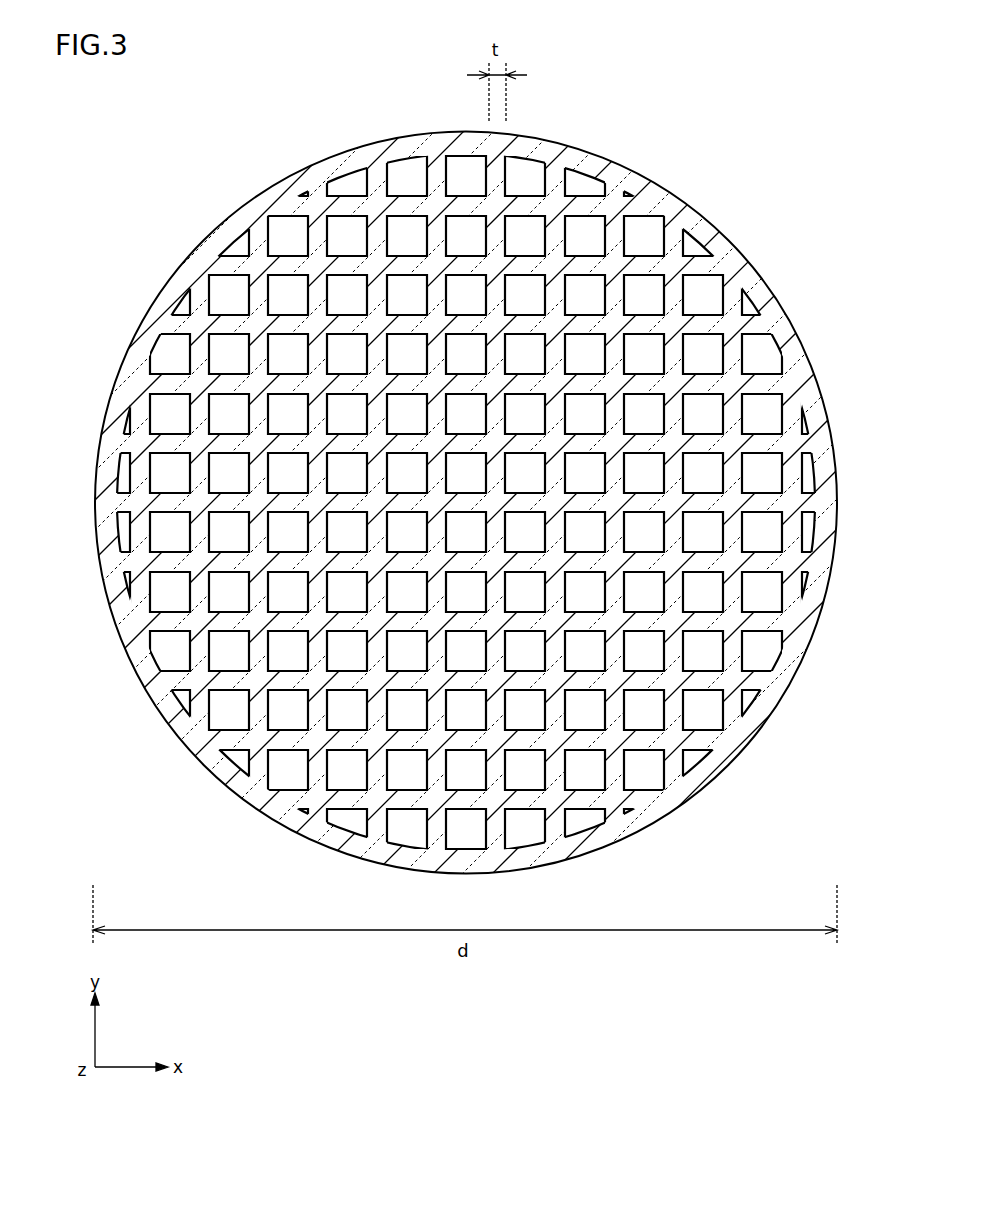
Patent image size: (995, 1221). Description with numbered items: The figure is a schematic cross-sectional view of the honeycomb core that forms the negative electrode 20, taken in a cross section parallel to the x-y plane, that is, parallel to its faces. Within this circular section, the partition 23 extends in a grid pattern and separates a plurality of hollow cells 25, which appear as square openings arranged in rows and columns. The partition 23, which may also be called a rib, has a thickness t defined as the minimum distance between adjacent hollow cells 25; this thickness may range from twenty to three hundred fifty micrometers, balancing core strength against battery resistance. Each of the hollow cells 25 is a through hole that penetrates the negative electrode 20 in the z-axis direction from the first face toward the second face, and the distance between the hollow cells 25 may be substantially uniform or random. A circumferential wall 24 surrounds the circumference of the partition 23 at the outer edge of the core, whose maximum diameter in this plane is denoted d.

The negative electrode 20 is at (497, 500).
The partition 23 is at (243, 328).
The circumferential wall 24 is at (217, 782).
The hollow cells 25 is at (290, 237).